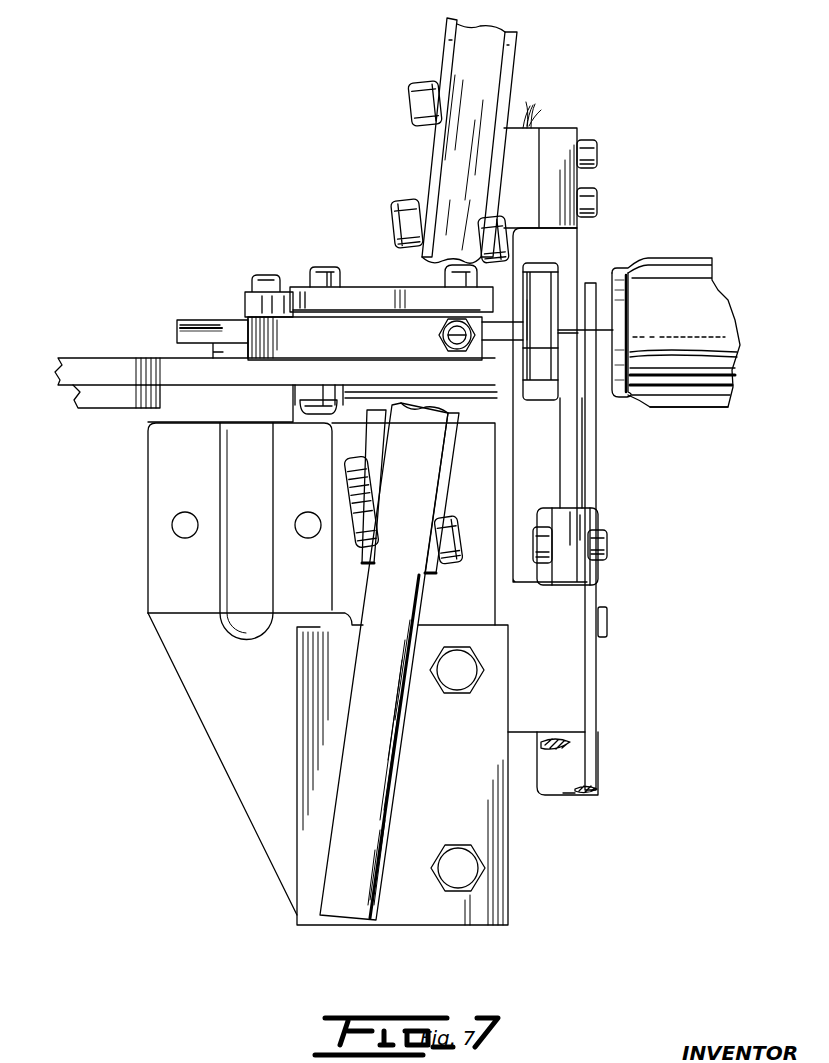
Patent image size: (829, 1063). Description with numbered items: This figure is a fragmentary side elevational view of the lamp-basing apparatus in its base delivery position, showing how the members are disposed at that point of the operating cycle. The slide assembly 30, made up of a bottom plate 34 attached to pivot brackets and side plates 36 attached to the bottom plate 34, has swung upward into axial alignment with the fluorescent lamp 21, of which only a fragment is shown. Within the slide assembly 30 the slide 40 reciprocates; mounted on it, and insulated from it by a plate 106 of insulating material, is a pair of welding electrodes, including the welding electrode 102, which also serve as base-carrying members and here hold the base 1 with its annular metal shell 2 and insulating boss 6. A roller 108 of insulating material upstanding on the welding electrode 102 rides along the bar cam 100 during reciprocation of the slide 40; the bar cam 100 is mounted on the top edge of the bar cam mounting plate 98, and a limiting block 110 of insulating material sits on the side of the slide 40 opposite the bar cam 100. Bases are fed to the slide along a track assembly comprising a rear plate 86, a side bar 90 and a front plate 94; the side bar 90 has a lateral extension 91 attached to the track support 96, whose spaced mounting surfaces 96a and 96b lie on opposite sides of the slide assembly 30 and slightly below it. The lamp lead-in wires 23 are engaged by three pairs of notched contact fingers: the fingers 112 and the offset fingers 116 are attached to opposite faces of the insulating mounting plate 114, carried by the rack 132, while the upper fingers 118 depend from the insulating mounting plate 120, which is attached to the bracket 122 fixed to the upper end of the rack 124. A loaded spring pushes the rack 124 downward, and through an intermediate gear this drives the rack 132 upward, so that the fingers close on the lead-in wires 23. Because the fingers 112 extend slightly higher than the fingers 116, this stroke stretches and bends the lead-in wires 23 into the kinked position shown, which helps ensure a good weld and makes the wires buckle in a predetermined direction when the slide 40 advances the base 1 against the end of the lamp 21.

The base 1 is at (415, 110).
The annular metal shell 2 is at (535, 396).
The boss 6 is at (513, 322).
The fluorescent lamp 21 is at (683, 256).
The lead-in wires 23 is at (596, 330).
The slide assembly 30 is at (127, 285).
The bottom plate 34 is at (100, 402).
The side plates 36 is at (112, 372).
The slide 40 is at (205, 372).
The rear plate 86 is at (510, 58).
The side bar 90 is at (482, 42).
The lateral extension 91 is at (508, 868).
The front plate 94 is at (448, 33).
The track support 96 is at (195, 700).
The mounting surface 96a is at (413, 524).
The mounting surface 96b is at (152, 540).
The bar cam mounting plate 98 is at (302, 312).
The bar cam 100 is at (346, 300).
The welding electrode 102 is at (220, 328).
The plate of insulating material 106 is at (222, 352).
The roller 108 is at (236, 315).
The limiting block 110 is at (397, 332).
The contact fingers 112 is at (588, 440).
The mounting plate 114 is at (580, 520).
The contact fingers 116 is at (560, 458).
The contact fingers 118 is at (577, 242).
The mounting plate 120 is at (568, 130).
The bracket 122 is at (516, 128).
The rack 124 is at (598, 734).
The rack 132 is at (562, 794).